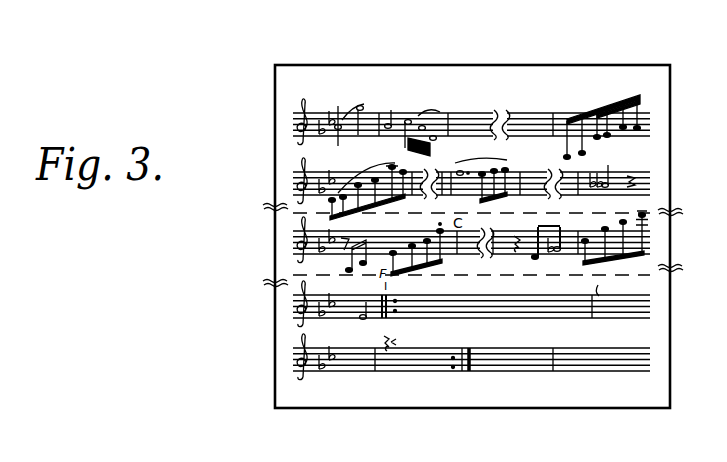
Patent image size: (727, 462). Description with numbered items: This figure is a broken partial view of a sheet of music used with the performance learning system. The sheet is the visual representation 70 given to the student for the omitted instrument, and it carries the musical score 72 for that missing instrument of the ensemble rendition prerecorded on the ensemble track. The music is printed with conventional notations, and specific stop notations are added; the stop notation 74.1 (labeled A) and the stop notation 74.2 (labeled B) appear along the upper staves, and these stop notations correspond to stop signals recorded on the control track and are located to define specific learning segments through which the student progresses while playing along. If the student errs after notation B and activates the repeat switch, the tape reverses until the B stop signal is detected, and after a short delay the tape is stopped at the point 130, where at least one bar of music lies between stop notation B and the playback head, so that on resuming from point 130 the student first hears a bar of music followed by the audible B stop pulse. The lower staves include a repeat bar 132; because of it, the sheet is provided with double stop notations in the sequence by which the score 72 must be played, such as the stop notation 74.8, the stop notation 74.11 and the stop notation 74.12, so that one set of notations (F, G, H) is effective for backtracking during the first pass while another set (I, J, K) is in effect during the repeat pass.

The visual representation 70 is at (279, 318).
The musical score 72 is at (497, 91).
The stop notation 74.1 is at (390, 97).
The stop notation 74.2 is at (526, 155).
The stop notation 74.8 is at (370, 331).
The stop notation 74.11 is at (384, 346).
The stop notation 74.12 is at (560, 342).
The point 130 is at (448, 146).
The repeat bar 132 is at (468, 344).